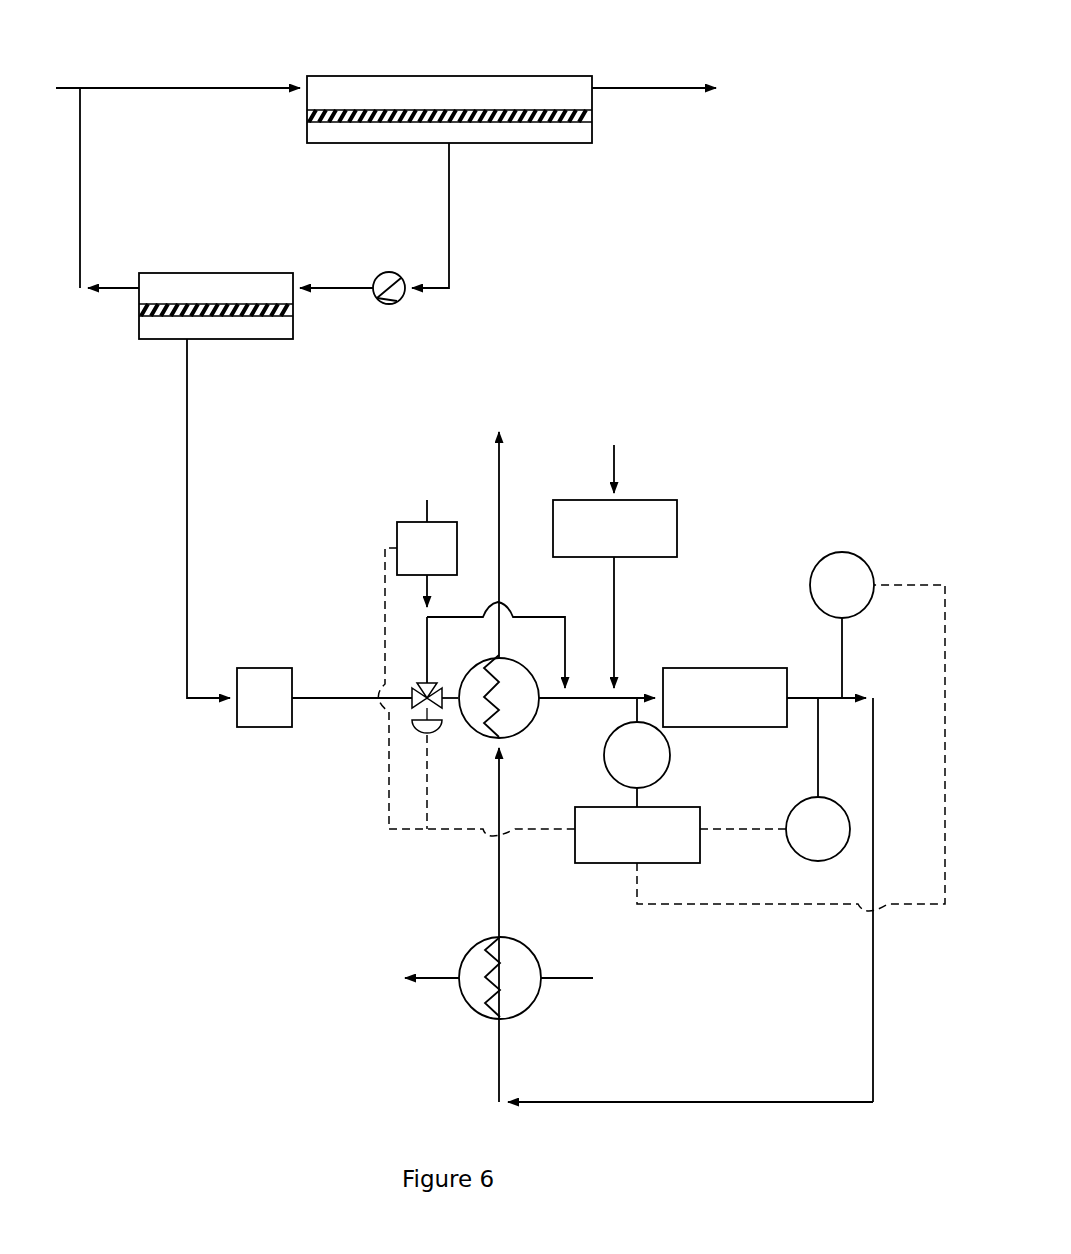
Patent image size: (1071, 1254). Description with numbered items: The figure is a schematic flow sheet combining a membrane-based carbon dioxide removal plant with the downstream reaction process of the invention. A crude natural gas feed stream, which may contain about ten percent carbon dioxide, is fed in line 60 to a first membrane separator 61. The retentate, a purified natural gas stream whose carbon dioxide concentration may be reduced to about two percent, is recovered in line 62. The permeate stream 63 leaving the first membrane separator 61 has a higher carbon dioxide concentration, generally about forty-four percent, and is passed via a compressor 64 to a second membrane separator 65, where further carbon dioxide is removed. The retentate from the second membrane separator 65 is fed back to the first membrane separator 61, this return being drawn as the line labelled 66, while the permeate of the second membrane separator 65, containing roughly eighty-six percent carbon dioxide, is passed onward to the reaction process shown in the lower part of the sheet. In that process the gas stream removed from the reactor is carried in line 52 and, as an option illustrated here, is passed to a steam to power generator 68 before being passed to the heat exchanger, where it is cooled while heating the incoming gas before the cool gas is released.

The line 60 is at (153, 78).
The first membrane separator 61 is at (472, 75).
The line 62 is at (677, 87).
The permeate stream 63 is at (449, 210).
The compressor 64 is at (391, 270).
The second membrane separator 65 is at (222, 272).
The recycle line 66 is at (80, 153).
The steam to power generator 68 is at (433, 973).
The line 52 is at (796, 1074).